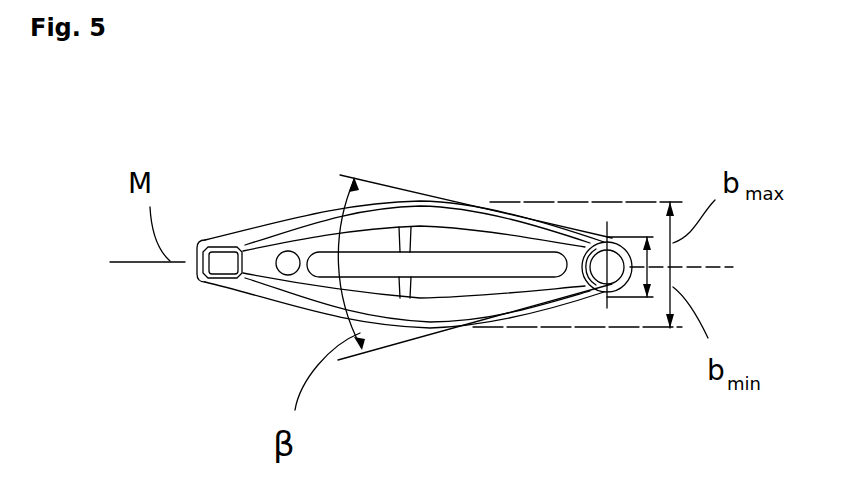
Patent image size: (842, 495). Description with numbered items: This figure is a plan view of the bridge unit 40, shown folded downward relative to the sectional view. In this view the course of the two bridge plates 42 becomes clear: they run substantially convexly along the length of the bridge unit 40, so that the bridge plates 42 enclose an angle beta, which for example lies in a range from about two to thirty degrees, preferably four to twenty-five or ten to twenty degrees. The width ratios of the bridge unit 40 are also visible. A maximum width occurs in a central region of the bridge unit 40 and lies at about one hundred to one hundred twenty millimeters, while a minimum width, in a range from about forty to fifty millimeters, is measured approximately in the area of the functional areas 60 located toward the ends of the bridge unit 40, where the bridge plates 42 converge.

The bridge unit 40 is at (467, 178).
The bridge plates 42 is at (283, 210).
The functional area 60 is at (222, 258).